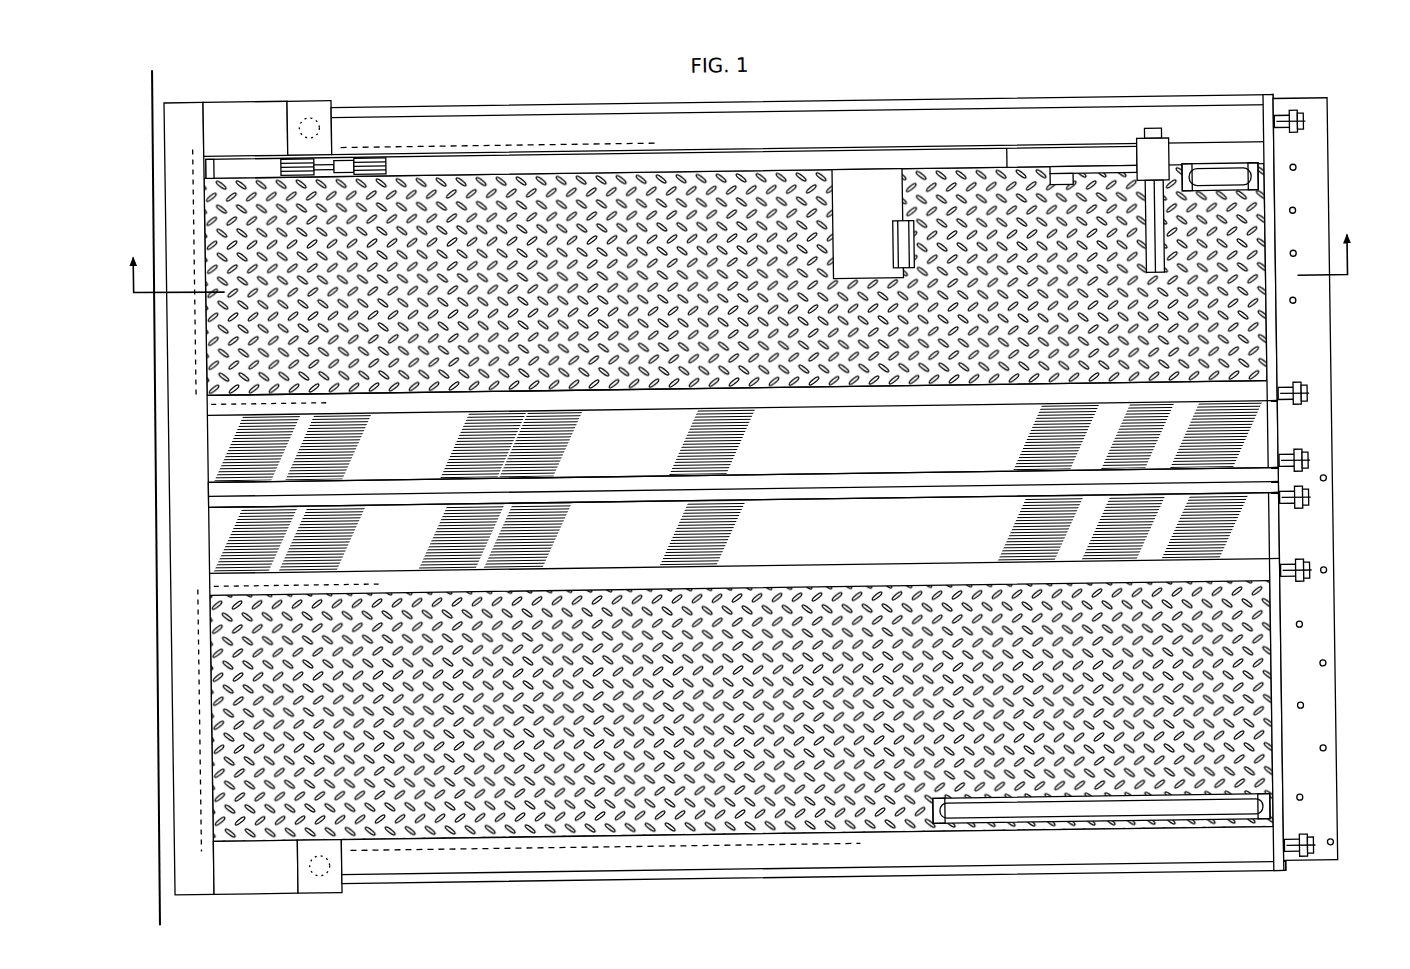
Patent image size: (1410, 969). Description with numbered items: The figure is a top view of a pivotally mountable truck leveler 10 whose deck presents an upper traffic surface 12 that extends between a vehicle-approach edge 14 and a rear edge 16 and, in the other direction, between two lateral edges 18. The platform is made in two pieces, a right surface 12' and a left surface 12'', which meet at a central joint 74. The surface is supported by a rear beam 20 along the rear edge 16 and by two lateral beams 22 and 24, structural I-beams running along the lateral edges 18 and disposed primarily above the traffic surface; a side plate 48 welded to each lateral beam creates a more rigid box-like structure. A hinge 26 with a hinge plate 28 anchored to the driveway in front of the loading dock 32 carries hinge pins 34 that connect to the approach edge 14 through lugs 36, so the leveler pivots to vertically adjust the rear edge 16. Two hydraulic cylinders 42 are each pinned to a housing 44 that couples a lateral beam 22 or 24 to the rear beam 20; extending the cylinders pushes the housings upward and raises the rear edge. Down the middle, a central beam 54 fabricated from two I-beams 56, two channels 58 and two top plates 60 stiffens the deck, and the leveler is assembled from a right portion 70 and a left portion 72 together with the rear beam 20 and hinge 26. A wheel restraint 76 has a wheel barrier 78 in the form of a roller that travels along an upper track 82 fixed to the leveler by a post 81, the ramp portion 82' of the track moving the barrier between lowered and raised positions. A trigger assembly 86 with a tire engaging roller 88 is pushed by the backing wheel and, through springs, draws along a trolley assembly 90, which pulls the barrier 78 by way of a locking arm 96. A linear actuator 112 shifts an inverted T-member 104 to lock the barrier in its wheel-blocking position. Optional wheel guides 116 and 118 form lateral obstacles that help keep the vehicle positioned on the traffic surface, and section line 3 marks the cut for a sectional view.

The leveler 10 is at (1166, 894).
The upper traffic surface 12 is at (738, 503).
The right surface 12' is at (735, 280).
The left surface 12'' is at (741, 711).
The vehicle-approach edge 14 is at (1269, 705).
The rear edge 16 is at (194, 358).
The lateral edges 18 is at (488, 148).
The rear beam 20 is at (189, 590).
The lateral beam 22 is at (543, 127).
The lateral beam 24 is at (921, 871).
The hinge 26 is at (1290, 106).
The hinge plate 28 is at (1309, 726).
The loading dock 32 is at (152, 100).
The hinge pins 34 is at (1293, 591).
The lugs 36 is at (1308, 408).
The hydraulic cylinders 42 is at (316, 120).
The housing 44 is at (338, 132).
The side plate 48 is at (885, 110).
The central beam 54 is at (869, 381).
The I-beams 56 is at (636, 421).
The channels 58 is at (921, 485).
The top plates 60 is at (737, 487).
The right portion 70 is at (1334, 455).
The left portion 72 is at (1335, 536).
The central joint 74 is at (622, 496).
The wheel restraint 76 is at (1186, 159).
The wheel barrier 78 is at (1165, 241).
The post 81 is at (189, 189).
The upper track 82 is at (671, 145).
The ramp portion 82' is at (1000, 142).
The trigger assembly 86 is at (868, 224).
The tire engaging roller 88 is at (888, 255).
The trolley assembly 90 is at (976, 186).
The locking arm 96 is at (1096, 196).
The T-member 104 is at (364, 181).
The linear actuator 112 is at (299, 180).
The wheel guide 116 is at (1095, 831).
The wheel guide 118 is at (1239, 203).
The section line 3- 3 is at (739, 246).